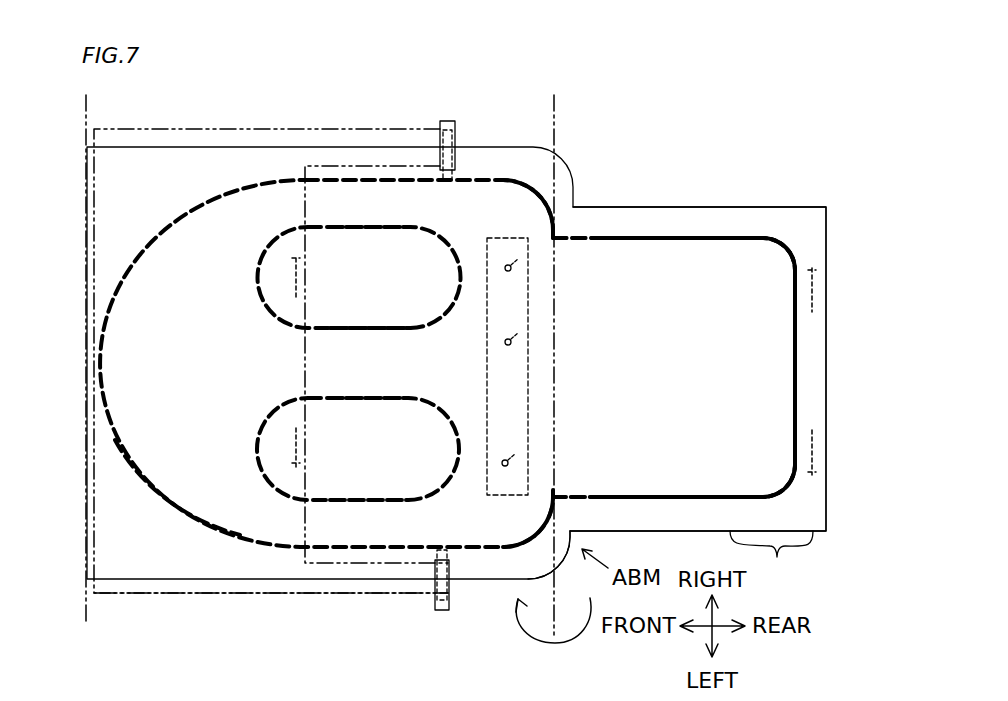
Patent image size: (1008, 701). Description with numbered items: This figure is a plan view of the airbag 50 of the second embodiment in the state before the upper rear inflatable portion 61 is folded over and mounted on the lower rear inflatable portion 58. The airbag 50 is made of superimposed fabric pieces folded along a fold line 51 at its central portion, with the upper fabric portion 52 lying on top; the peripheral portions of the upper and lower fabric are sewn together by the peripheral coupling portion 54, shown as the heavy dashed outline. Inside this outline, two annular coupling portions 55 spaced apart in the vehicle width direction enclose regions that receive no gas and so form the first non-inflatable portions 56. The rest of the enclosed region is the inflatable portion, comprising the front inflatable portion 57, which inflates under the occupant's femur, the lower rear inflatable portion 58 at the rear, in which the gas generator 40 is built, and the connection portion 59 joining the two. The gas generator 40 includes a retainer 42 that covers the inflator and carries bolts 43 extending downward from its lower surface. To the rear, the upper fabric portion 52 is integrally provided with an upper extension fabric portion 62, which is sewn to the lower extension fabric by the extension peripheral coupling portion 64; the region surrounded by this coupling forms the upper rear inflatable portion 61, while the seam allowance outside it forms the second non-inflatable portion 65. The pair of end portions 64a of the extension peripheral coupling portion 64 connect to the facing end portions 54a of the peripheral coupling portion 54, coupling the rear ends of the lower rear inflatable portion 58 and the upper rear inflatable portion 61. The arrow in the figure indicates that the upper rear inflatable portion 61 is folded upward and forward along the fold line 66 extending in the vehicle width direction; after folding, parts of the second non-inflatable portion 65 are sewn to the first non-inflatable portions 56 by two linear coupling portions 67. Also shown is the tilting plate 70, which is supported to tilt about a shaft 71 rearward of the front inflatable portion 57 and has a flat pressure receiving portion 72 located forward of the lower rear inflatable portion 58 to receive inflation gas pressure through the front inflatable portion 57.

The gas generator 40 is at (528, 370).
The retainer 42 is at (552, 366).
The bolt 43 is at (518, 270).
The airbag 50 is at (500, 147).
The fold line 51 is at (88, 613).
The upper fabric portion 52 is at (225, 160).
The peripheral coupling portion 54 is at (160, 228).
The end portions of the peripheral coupling portion 54a is at (548, 248).
The annular coupling portion 55 is at (258, 274).
The first non-inflatable portion 56 is at (383, 418).
The front inflatable portion 57 is at (160, 488).
The lower rear inflatable portion 58 is at (495, 540).
The connection portion 59 is at (366, 212).
The upper rear inflatable portion 61 is at (717, 333).
The upper extension fabric portion 62 is at (710, 257).
The extension peripheral coupling portion 64 is at (648, 237).
The end portions of the extension peripheral coupling portion 64a is at (557, 250).
The second non-inflatable portion 65 is at (780, 218).
The fold line 66 is at (557, 107).
The coupling portion 67 is at (293, 262).
The tilting plate 70 is at (205, 595).
The shaft 71 is at (440, 121).
The pressure receiving portion 72 is at (271, 611).